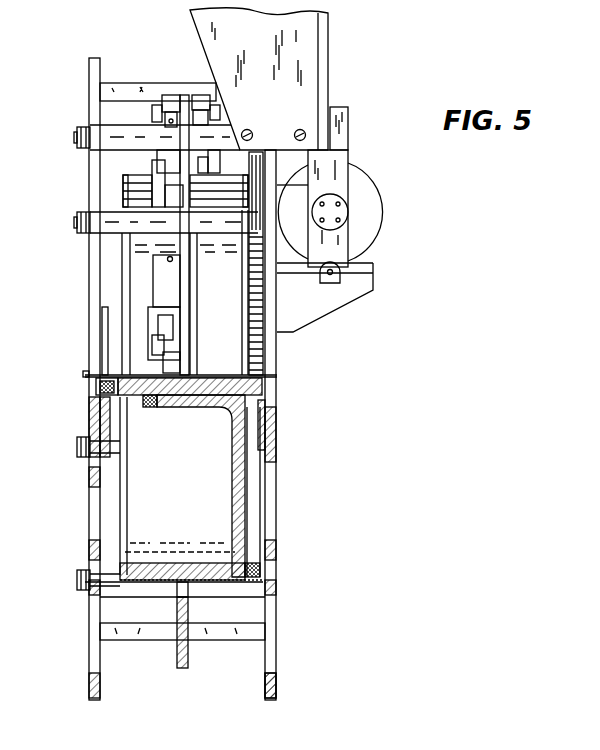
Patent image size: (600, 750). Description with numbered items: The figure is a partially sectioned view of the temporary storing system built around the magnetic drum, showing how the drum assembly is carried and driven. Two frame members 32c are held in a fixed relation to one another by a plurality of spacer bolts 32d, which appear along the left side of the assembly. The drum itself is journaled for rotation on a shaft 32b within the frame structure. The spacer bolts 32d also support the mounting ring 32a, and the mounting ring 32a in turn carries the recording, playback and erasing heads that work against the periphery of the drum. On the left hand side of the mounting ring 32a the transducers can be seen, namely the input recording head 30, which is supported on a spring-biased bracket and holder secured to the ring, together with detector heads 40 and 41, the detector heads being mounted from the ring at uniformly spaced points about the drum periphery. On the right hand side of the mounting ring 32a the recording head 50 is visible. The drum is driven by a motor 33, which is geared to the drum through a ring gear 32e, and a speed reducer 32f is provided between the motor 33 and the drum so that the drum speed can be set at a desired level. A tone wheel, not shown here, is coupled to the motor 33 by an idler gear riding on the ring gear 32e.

The input recording head 30 is at (152, 115).
The recording head 50 is at (212, 97).
The detector head 40 is at (152, 167).
The detector head 41 is at (172, 275).
The spacer bolts 32d is at (78, 220).
The shaft 32b is at (86, 373).
The ring gear 32e is at (260, 357).
The speed reducer 32f is at (340, 163).
The motor 33 is at (383, 207).
The mounting ring 32a is at (190, 655).
The frame members 32c is at (100, 688).